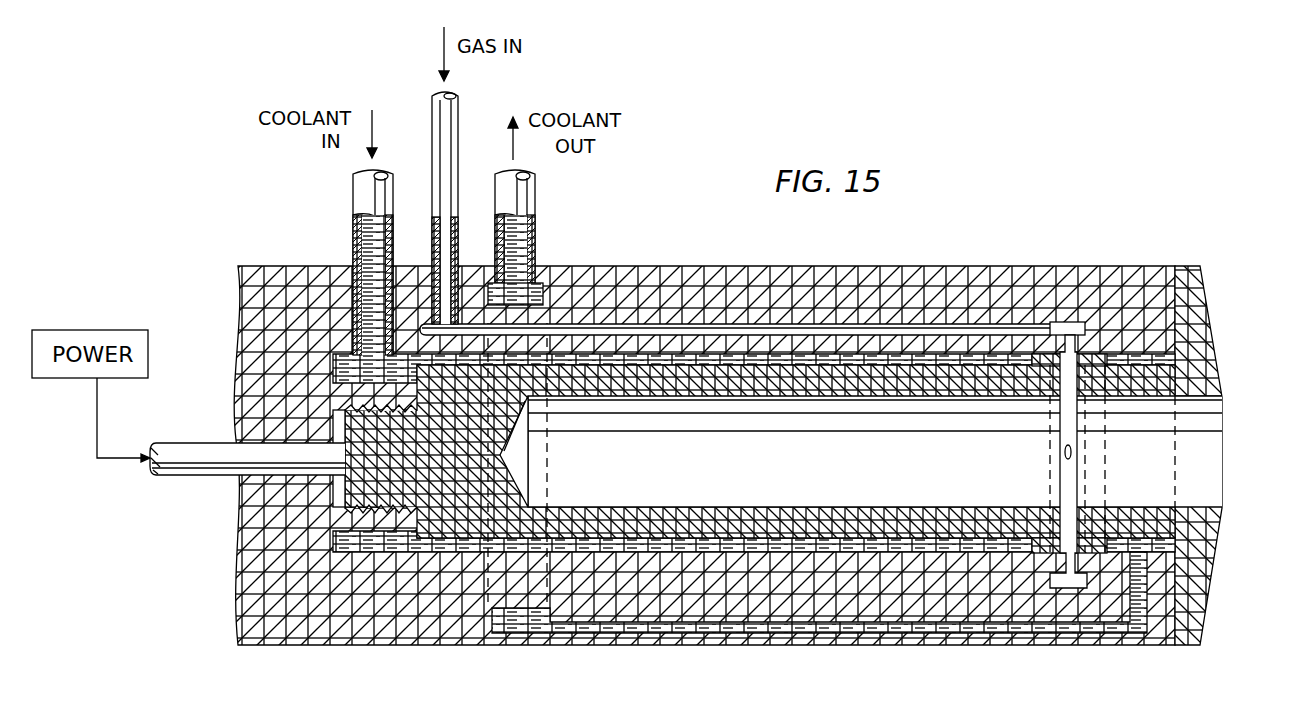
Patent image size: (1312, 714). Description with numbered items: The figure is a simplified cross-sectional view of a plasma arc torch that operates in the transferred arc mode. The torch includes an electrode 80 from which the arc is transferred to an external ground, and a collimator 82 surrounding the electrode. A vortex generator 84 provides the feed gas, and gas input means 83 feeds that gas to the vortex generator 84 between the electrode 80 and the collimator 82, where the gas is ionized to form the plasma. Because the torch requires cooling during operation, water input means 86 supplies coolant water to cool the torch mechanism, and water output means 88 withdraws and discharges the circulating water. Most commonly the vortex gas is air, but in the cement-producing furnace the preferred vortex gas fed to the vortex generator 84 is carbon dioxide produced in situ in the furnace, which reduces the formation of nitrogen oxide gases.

The electrode 80 is at (475, 478).
The collimator 82 is at (1210, 486).
The gas input means 83 is at (440, 113).
The vortex generator 84 is at (1070, 323).
The water input means 86 is at (355, 196).
The water output means 88 is at (534, 197).